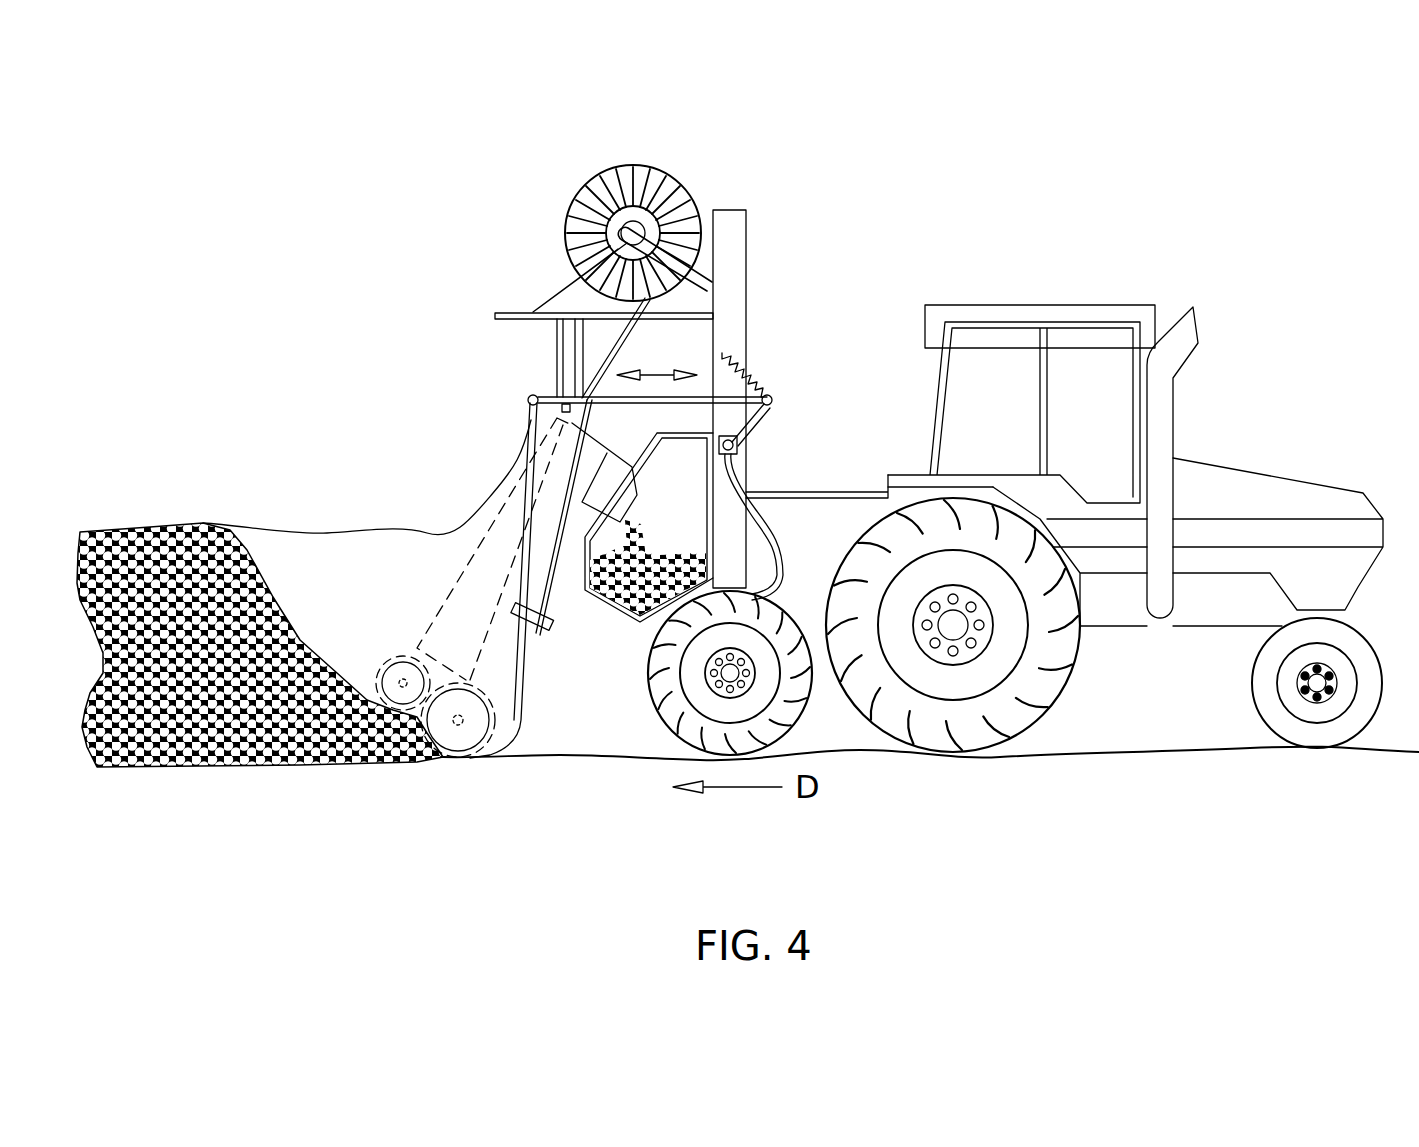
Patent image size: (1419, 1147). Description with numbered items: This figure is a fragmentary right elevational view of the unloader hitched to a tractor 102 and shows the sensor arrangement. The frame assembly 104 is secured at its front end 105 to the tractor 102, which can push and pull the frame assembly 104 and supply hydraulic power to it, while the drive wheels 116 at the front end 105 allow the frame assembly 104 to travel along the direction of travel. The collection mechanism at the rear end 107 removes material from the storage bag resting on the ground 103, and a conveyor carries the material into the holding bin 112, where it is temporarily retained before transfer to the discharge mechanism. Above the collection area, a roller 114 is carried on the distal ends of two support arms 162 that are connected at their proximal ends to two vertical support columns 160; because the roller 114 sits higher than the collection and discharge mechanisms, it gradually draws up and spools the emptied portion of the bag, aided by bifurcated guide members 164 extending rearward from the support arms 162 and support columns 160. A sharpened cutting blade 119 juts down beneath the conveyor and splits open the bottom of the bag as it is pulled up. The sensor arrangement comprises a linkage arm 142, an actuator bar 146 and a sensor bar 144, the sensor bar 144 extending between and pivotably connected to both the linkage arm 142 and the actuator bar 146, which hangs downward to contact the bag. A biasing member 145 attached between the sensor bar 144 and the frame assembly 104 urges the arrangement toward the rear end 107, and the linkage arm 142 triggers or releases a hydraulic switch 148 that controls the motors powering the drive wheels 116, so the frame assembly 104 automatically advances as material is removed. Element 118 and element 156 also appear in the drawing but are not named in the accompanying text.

The tractor 102 is at (1072, 304).
The ground 103 is at (270, 829).
The frame assembly 104 is at (515, 205).
The front end 105 is at (810, 478).
The rear end 107 is at (438, 468).
The holding bin 112 is at (613, 620).
The roller 114 is at (662, 178).
The drive wheels 116 is at (665, 725).
The rear drive wheel 118 is at (928, 752).
The cutting blade 119 is at (557, 632).
The linkage arm 142 is at (760, 412).
The sensor bar 144 is at (537, 394).
The biasing member 145 is at (748, 360).
The actuator bar 146 is at (520, 565).
The hydraulic switch 148 is at (740, 460).
The posts 156 is at (567, 343).
The vertical support columns 160 is at (747, 213).
The support arms 162 is at (708, 289).
The guide members 164 is at (543, 296).